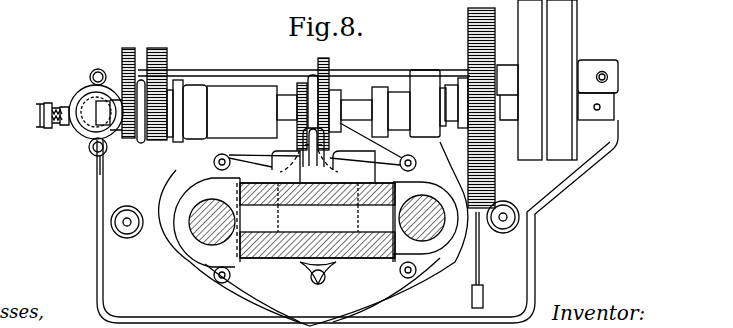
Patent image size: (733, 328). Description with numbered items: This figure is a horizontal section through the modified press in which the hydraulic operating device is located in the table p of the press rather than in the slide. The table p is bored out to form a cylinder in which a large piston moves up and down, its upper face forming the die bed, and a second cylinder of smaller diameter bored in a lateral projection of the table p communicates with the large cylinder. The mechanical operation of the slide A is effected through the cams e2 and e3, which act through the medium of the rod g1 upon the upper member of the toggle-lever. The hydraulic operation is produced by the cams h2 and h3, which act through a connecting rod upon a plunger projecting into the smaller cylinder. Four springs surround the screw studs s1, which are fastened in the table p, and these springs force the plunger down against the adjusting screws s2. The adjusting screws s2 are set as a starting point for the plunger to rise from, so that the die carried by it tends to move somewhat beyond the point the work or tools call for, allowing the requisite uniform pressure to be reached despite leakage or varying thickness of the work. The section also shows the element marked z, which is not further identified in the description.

The cam h2 is at (128, 50).
The cam h3 is at (157, 50).
The cam e2 is at (302, 83).
The cam e3 is at (326, 62).
The rod g1 is at (325, 139).
The slide A is at (202, 248).
The screw stud s1 is at (222, 154).
The adjusting screw s2 is at (311, 282).
The table p is at (318, 286).
The shaft z is at (86, 148).